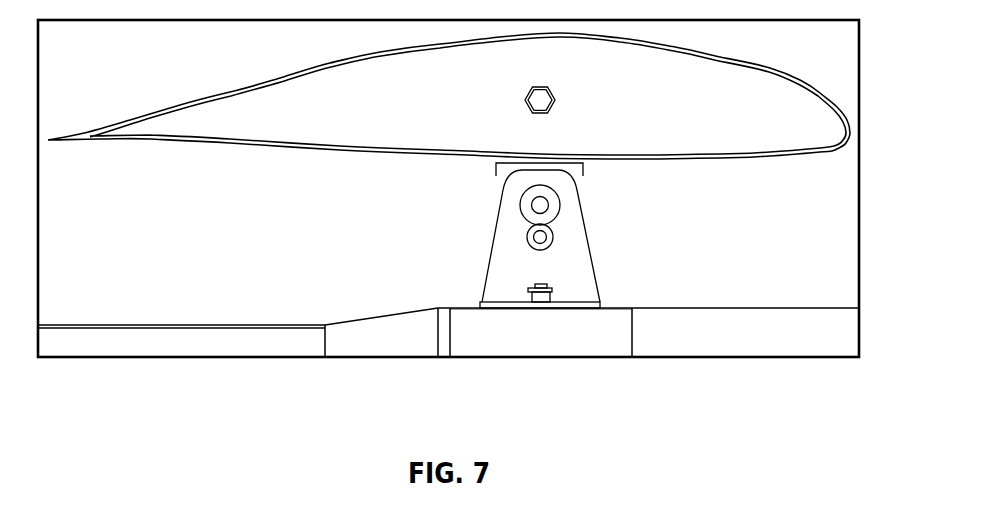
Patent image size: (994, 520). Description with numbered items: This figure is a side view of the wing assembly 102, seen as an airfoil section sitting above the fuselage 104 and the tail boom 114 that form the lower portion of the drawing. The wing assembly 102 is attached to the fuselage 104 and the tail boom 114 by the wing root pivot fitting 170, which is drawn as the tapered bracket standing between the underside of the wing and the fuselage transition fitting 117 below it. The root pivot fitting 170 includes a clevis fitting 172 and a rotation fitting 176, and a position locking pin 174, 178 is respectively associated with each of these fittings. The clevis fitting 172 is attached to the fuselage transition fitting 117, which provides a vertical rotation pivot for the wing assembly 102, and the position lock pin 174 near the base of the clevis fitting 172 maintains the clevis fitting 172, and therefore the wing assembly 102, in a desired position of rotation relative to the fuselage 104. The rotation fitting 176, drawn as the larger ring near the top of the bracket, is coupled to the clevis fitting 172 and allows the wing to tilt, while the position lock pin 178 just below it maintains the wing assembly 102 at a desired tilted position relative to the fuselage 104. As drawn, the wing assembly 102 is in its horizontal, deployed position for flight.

The wing assembly 102 is at (768, 67).
The fuselage 104 is at (448, 345).
The tail boom 114 is at (167, 347).
The fuselage transition fitting 117 is at (540, 325).
The wing root pivot fitting 170 is at (497, 235).
The clevis fitting 172 is at (508, 260).
The position locking pin 174 is at (527, 291).
The rotation fitting 176 is at (497, 177).
The position locking pin 178 is at (527, 242).